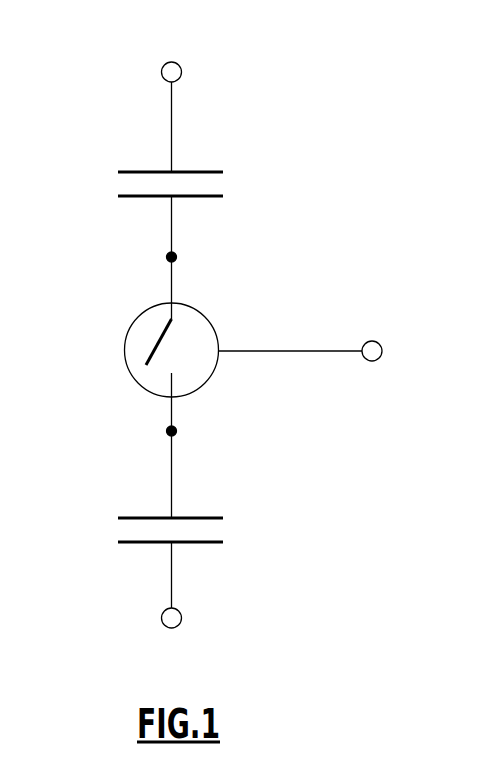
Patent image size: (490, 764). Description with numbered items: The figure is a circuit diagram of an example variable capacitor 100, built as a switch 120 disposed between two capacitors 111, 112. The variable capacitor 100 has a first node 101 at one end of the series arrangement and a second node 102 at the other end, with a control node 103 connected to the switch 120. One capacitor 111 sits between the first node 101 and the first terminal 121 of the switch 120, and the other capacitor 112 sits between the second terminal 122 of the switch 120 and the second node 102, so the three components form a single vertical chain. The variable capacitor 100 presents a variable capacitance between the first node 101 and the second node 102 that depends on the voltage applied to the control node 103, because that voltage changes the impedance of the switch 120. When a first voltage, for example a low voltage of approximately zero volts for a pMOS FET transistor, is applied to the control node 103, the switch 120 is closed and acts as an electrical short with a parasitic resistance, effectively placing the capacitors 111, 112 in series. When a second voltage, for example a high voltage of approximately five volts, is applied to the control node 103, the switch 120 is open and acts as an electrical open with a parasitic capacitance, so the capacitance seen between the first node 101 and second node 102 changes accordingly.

The variable capacitor 100 is at (293, 78).
The first node 101 is at (161, 74).
The second node 102 is at (161, 620).
The control node 103 is at (379, 344).
The capacitor 111 is at (134, 196).
The capacitor 112 is at (134, 542).
The switch 120 is at (124, 352).
The first terminal 121 is at (166, 257).
The second terminal 122 is at (177, 433).